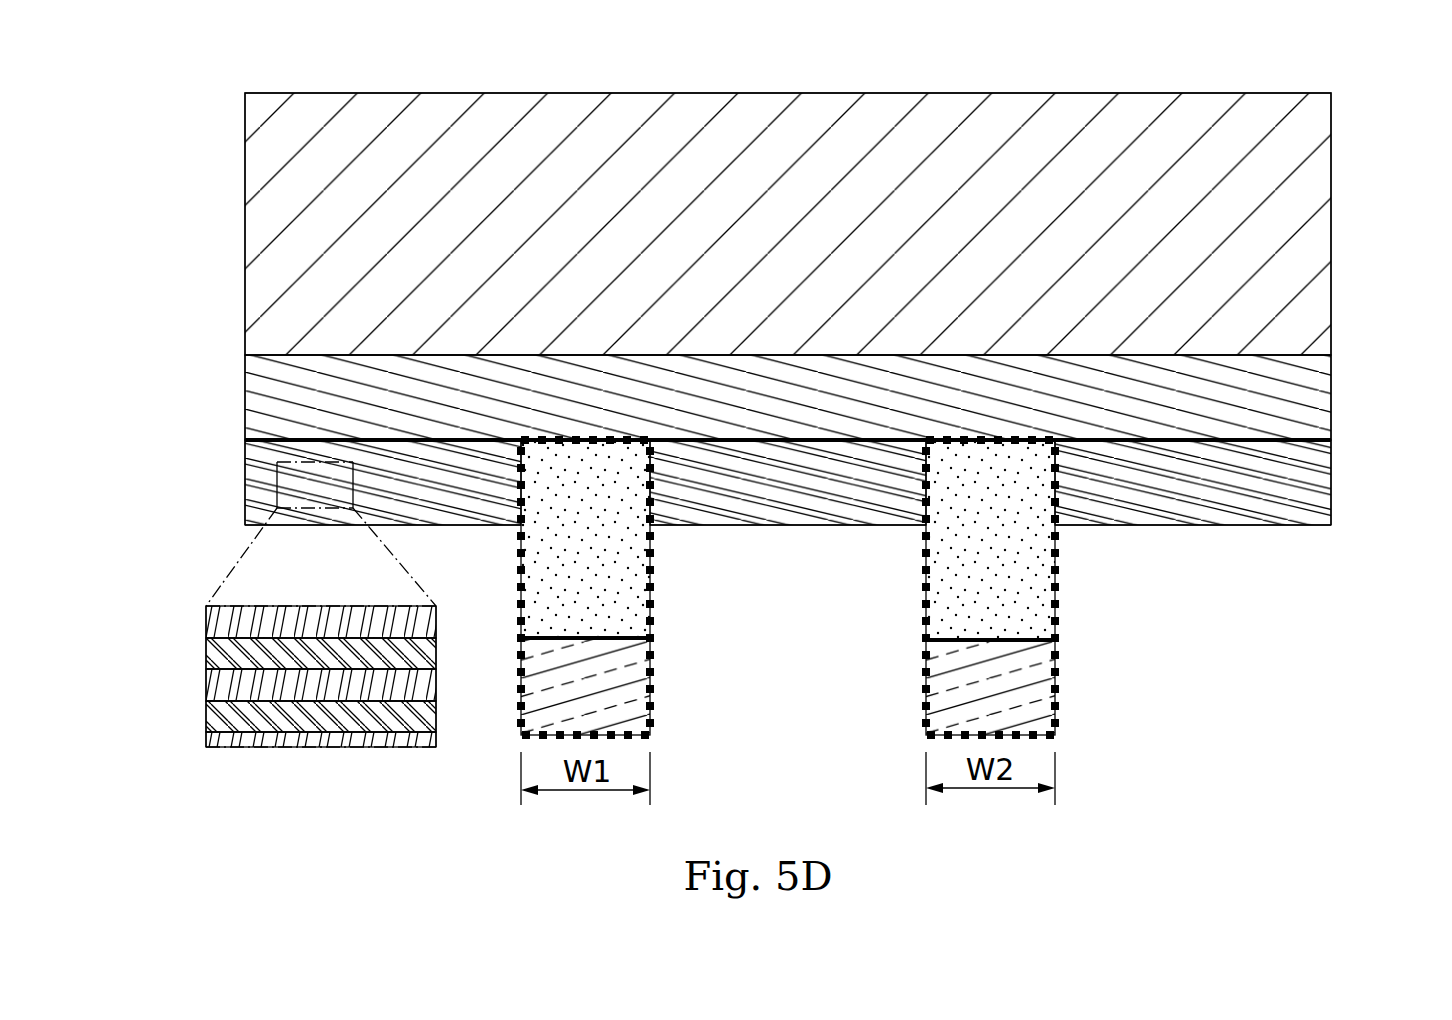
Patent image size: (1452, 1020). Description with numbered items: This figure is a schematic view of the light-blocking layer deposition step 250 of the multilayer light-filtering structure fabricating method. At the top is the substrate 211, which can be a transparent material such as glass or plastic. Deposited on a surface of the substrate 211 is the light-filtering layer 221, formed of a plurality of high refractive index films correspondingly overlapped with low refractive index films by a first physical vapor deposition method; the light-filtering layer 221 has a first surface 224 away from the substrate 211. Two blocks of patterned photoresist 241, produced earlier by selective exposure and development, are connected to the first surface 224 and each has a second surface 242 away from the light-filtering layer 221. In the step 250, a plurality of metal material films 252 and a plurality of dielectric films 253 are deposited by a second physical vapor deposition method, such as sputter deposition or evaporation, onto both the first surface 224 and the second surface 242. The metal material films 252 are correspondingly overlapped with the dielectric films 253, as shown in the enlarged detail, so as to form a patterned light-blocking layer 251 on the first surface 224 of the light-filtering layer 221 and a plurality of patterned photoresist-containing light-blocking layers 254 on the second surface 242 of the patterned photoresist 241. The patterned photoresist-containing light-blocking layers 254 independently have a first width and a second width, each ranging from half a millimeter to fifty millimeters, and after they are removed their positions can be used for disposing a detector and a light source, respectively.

The step 250 is at (68, 52).
The substrate 211 is at (1331, 226).
The light-filtering layer 221 is at (1331, 402).
The first surface 224 is at (1331, 441).
The patterned light-blocking layer 251 is at (470, 495).
The metal material films 252 is at (217, 623).
The dielectric films 253 is at (215, 655).
The patterned photoresist 241 is at (615, 583).
The second surface 242 is at (603, 638).
The patterned photoresist-containing light-blocking layers 254 is at (653, 673).